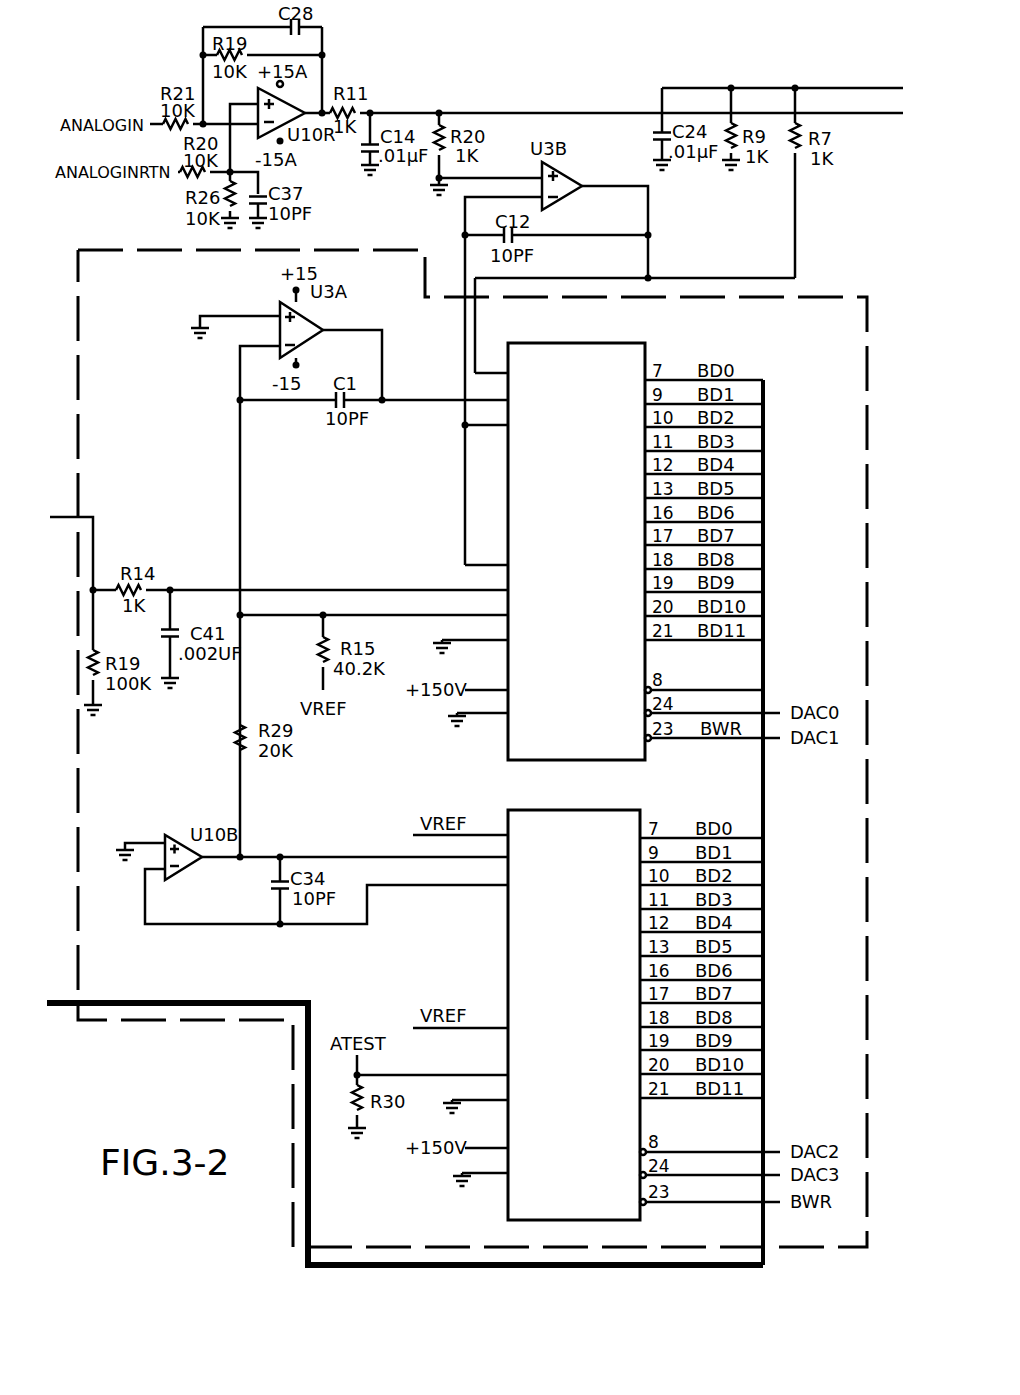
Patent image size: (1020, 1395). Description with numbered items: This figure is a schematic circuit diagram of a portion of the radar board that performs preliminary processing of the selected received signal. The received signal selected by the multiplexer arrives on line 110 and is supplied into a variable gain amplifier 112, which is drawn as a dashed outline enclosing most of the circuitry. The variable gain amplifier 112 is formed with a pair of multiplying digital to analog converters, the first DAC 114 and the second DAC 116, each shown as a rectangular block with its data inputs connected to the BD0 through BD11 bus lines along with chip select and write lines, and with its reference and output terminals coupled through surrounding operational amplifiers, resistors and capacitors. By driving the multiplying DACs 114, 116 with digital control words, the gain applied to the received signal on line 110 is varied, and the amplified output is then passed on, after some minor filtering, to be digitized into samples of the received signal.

The line 110 is at (93, 540).
The variable gain amplifier 112 is at (841, 297).
The multiplying digital to analog converter 114 is at (575, 760).
The multiplying digital to analog converter 116 is at (583, 797).